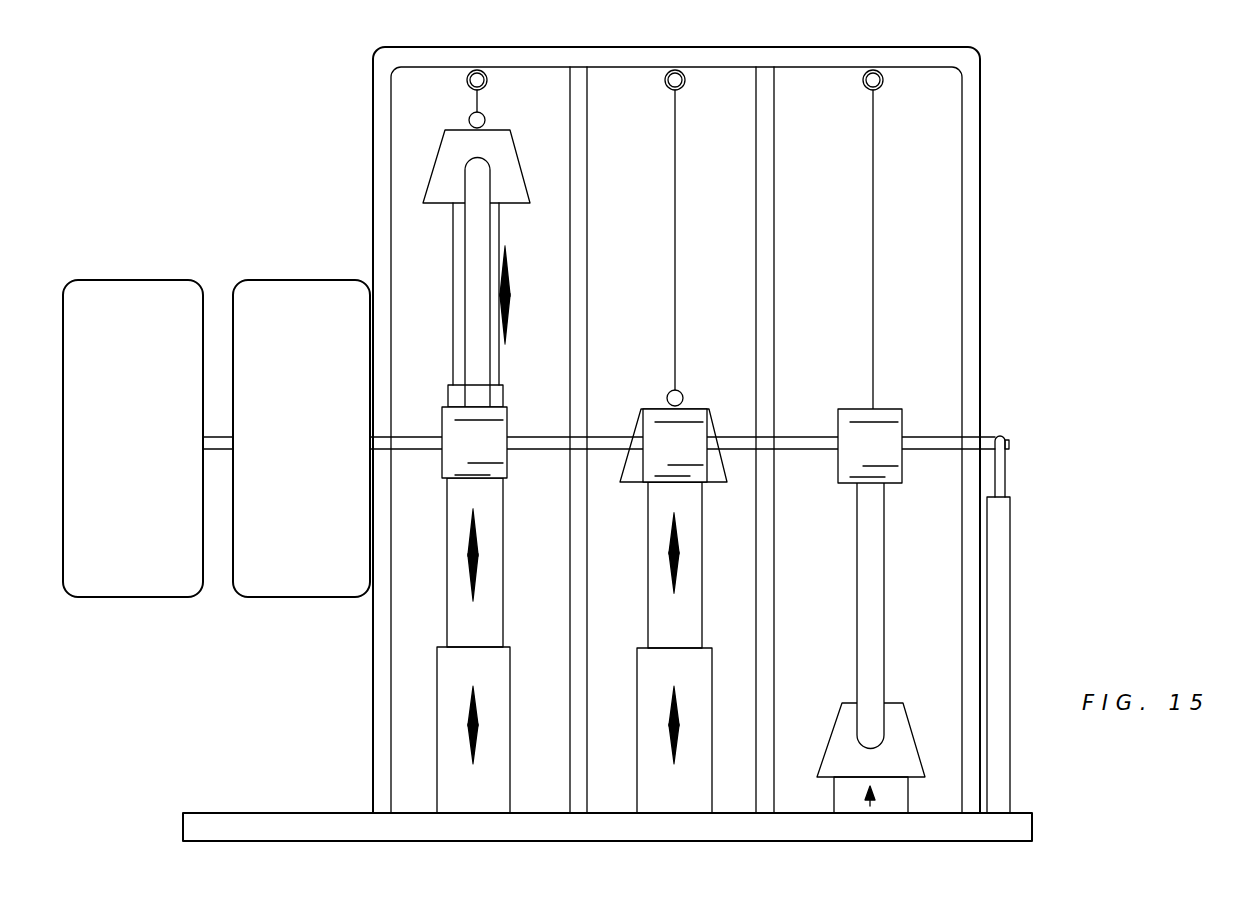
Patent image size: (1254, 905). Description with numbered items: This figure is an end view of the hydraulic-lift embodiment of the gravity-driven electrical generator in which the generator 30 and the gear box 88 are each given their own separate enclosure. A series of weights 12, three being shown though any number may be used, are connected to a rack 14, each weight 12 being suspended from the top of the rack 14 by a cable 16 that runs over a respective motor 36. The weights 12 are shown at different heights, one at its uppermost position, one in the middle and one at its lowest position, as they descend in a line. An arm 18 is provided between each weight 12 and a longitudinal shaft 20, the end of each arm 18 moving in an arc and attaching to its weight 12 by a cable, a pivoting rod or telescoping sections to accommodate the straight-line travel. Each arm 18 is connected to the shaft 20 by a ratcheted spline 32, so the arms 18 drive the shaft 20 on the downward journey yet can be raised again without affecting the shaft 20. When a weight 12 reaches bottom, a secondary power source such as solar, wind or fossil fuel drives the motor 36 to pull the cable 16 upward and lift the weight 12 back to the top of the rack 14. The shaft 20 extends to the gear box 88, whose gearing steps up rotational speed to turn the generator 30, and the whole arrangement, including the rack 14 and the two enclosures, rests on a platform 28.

The weight 12 is at (442, 145).
The rack 14 is at (372, 98).
The cable 16 is at (470, 97).
The arm 18 is at (460, 315).
The longitudinal shaft 20 is at (948, 437).
The platform 28 is at (190, 812).
The electric generator 30 is at (133, 438).
The ratcheted spline 32 is at (672, 445).
The motor 36 is at (488, 84).
The gear box 88 is at (301, 438).